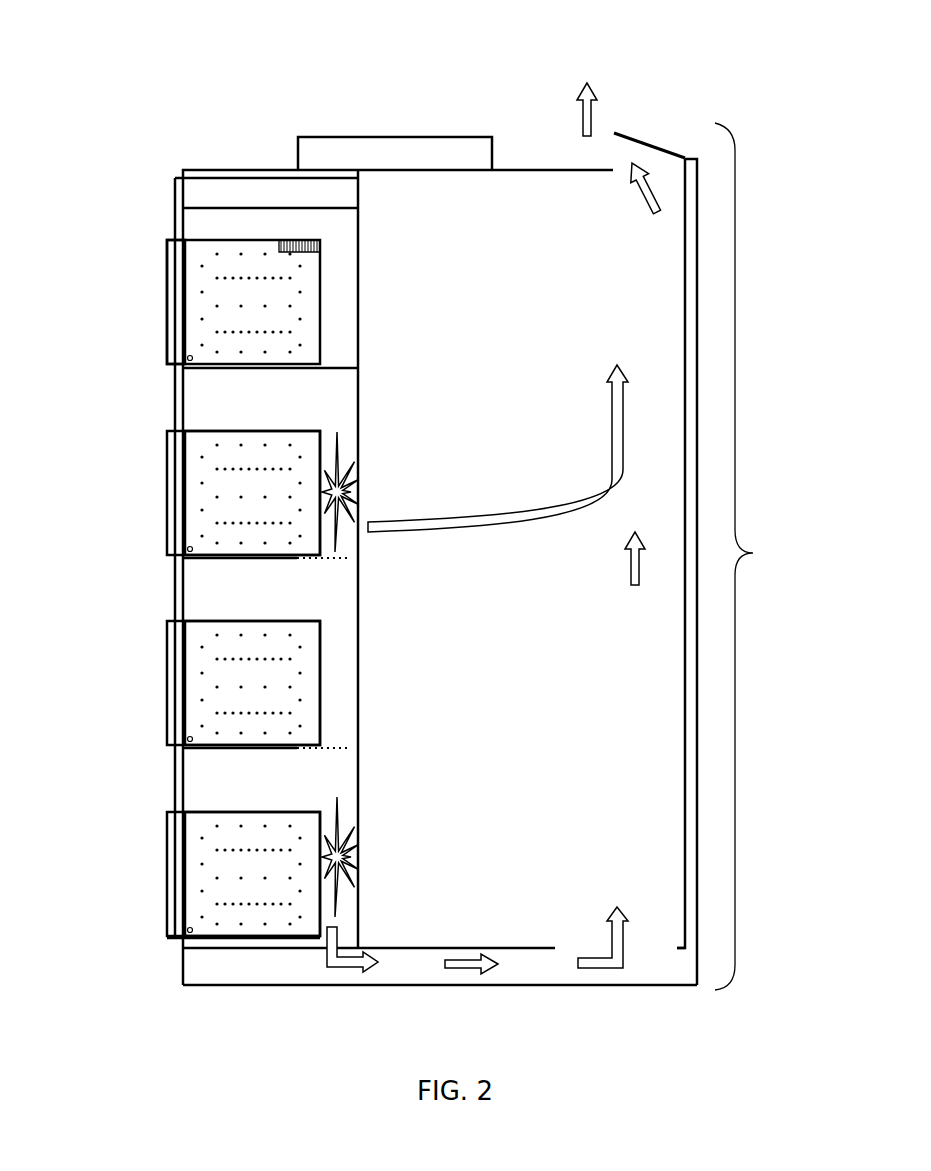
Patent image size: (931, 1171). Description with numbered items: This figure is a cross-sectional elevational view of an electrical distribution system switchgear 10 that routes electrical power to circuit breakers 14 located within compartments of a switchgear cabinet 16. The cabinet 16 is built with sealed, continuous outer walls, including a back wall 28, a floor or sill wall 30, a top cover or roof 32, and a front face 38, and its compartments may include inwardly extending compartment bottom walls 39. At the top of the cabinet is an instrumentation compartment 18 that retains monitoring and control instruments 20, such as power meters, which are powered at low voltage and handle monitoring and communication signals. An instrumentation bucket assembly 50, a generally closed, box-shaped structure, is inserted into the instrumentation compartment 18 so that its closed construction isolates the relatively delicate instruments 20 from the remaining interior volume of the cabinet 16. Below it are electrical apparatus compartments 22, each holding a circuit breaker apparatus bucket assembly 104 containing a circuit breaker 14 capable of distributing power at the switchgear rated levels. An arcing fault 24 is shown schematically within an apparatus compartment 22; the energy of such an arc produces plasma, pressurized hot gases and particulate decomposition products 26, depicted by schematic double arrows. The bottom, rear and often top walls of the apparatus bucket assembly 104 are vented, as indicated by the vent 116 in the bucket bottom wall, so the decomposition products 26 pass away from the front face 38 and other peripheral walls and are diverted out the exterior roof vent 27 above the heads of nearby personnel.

The electrical distribution system switchgear 10 is at (753, 556).
The circuit breaker 14 is at (207, 482).
The switchgear cabinet 16 is at (266, 1036).
The instrumentation compartment 18 is at (344, 280).
The monitoring and control instrument 20 is at (168, 306).
The electrical apparatus compartment 22 is at (216, 397).
The arcing fault 24 is at (348, 497).
The decomposition products 26 is at (597, 110).
The exterior roof vent 27 is at (606, 157).
The back wall 28 is at (698, 848).
The floor or sill wall 30 is at (568, 986).
The top cover or roof 32 is at (520, 170).
The front face 38 is at (146, 920).
The compartment bottom wall 39 is at (310, 370).
The instrumentation bucket assembly 50 is at (241, 226).
The circuit breaker apparatus bucket assembly 104 is at (241, 427).
The vent 116 is at (330, 752).